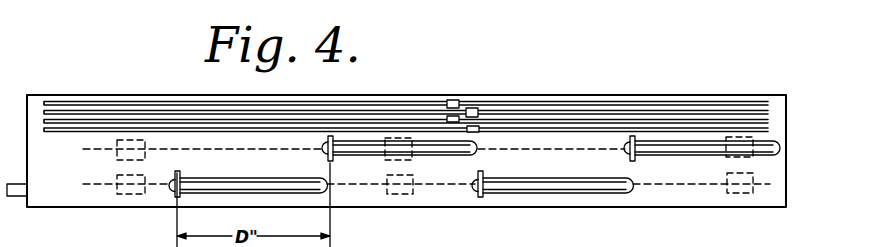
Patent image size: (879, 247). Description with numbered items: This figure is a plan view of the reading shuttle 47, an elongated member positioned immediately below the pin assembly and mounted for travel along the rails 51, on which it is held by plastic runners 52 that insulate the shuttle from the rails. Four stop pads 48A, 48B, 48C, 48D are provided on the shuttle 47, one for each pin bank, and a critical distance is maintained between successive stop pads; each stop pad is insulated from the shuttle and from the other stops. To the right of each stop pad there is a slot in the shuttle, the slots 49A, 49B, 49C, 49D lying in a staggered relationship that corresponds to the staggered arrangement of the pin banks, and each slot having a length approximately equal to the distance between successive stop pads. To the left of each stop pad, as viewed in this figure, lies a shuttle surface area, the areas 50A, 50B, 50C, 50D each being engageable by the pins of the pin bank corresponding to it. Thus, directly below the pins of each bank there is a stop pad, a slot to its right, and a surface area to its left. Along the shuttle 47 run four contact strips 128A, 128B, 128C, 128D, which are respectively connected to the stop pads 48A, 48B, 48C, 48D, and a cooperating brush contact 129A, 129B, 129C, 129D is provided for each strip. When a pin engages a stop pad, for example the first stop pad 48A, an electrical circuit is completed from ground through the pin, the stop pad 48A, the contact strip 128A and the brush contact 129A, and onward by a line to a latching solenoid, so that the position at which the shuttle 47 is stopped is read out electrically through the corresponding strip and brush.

The reading shuttle 47 is at (535, 200).
The stop pad 48A is at (173, 195).
The stop pad 48B is at (330, 135).
The stop pad 48C is at (482, 197).
The stop pad 48D is at (630, 140).
The slot 49A is at (230, 187).
The slot 49B is at (353, 142).
The slot 49C is at (595, 182).
The slot 49D is at (687, 150).
The shuttle surface area 50A is at (133, 197).
The shuttle surface area 50B is at (305, 148).
The shuttle surface area 50C is at (458, 190).
The shuttle surface area 50D is at (570, 149).
The rails 51 is at (250, 148).
The plastic runners 52 is at (115, 182).
The contact strip 128A is at (143, 105).
The contact strip 128B is at (132, 115).
The contact strip 128C is at (120, 123).
The contact strip 128D is at (107, 128).
The brush contact 129A is at (453, 100).
The brush contact 129B is at (477, 108).
The brush contact 129C is at (447, 119).
The brush contact 129D is at (478, 133).